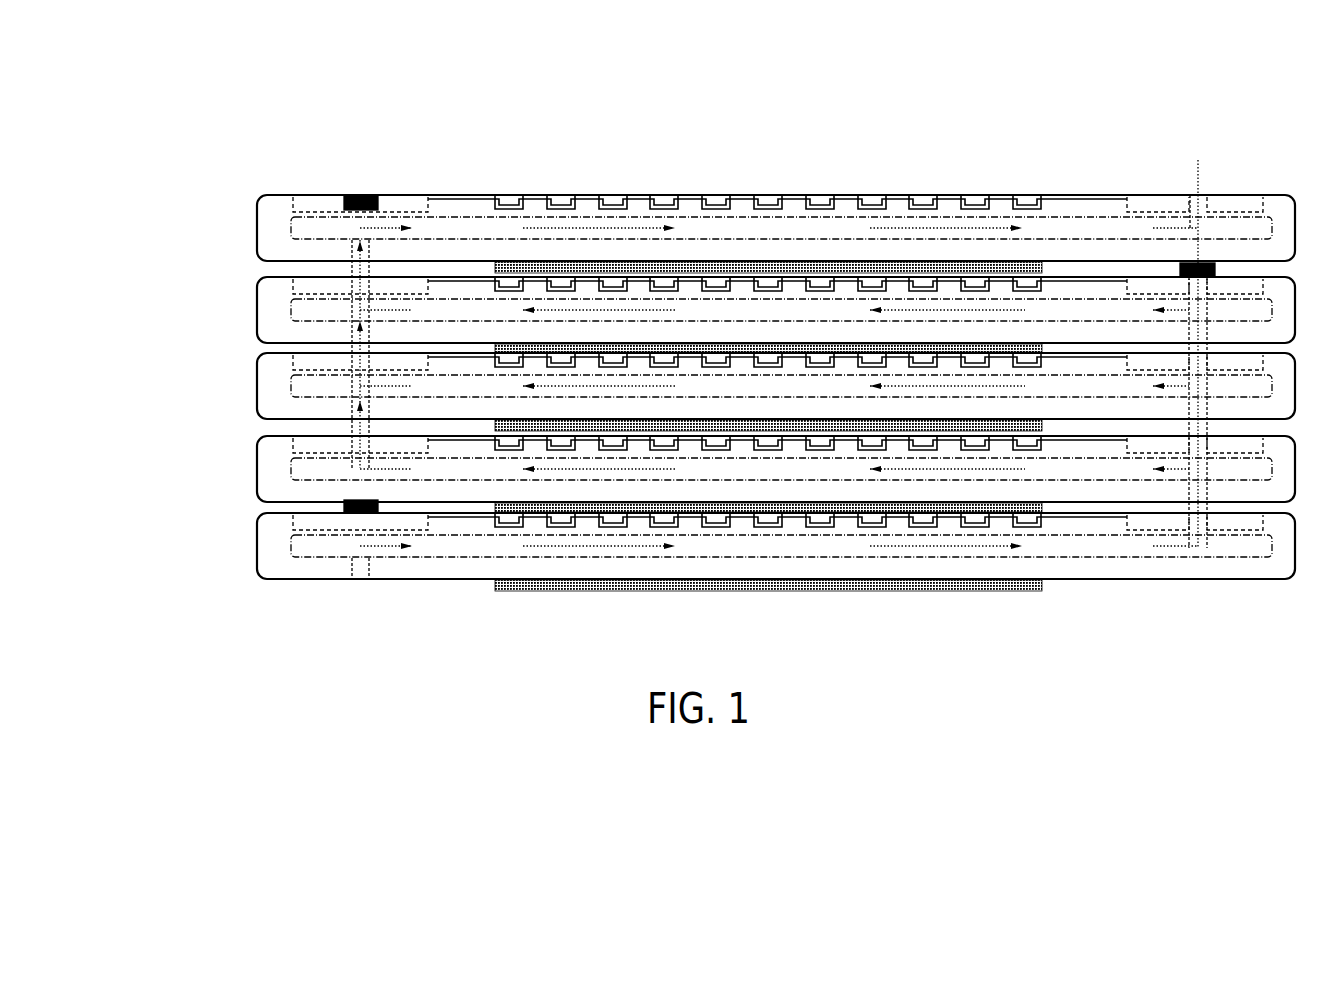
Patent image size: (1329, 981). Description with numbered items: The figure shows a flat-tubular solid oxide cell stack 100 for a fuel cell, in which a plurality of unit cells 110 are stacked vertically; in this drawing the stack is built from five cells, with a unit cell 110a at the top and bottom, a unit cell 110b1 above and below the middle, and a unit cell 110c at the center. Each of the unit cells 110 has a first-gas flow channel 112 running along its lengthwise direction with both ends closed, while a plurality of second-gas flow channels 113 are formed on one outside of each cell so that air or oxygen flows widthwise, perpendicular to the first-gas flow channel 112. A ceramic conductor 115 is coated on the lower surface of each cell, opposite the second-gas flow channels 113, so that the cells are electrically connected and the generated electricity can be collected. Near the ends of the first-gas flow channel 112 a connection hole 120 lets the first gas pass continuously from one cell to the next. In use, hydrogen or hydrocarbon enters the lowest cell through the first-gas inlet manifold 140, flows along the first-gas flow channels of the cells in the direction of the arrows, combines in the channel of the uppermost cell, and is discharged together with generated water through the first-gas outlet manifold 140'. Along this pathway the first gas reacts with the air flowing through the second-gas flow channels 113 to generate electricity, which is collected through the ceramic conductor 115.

The flat-tubular solid oxide cell stack 100 is at (428, 117).
The unit cells 110 is at (155, 213).
The unit cell 110a is at (257, 226).
The unit cell 110b1 is at (257, 308).
The unit cell 110c is at (257, 390).
The first-gas flow channel 112 is at (1075, 230).
The second-gas flow channels 113 is at (868, 200).
The ceramic conductor 115 is at (1030, 537).
The connection hole 120 is at (1203, 347).
The first-gas inlet manifold 140 is at (361, 445).
The first-gas outlet manifold 140' is at (1194, 336).